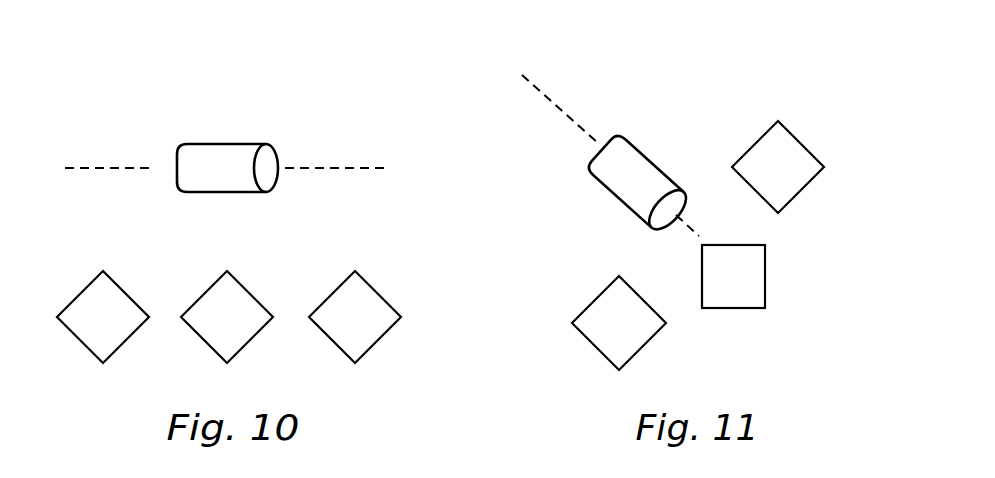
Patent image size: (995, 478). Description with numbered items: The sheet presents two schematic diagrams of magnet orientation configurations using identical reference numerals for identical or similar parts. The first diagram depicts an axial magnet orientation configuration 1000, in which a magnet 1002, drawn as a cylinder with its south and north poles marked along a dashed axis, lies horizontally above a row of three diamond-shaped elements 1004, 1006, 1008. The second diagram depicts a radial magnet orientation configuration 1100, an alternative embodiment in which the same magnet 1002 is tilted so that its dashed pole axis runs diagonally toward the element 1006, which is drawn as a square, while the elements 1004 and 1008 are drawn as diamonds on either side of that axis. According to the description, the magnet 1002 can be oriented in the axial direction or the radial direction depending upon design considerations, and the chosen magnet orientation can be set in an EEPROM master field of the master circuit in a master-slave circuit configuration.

In FIG. 10, the axial magnet orientation configuration 1000 is at (128, 96).
In FIG. 11, the radial magnet orientation configuration 1100 is at (762, 94).
In FIG. 10, the magnet 1002 is at (223, 157).
In FIG. 11, the magnet 1002 is at (636, 162).
In FIG. 10, the first magnetic sensor 1004 is at (103, 317).
In FIG. 11, the first magnetic sensor 1004 is at (619, 323).
In FIG. 10, the second magnetic sensor 1006 is at (227, 317).
In FIG. 11, the second magnetic sensor 1006 is at (733, 276).
In FIG. 10, the third magnetic sensor 1008 is at (355, 317).
In FIG. 11, the third magnetic sensor 1008 is at (778, 167).